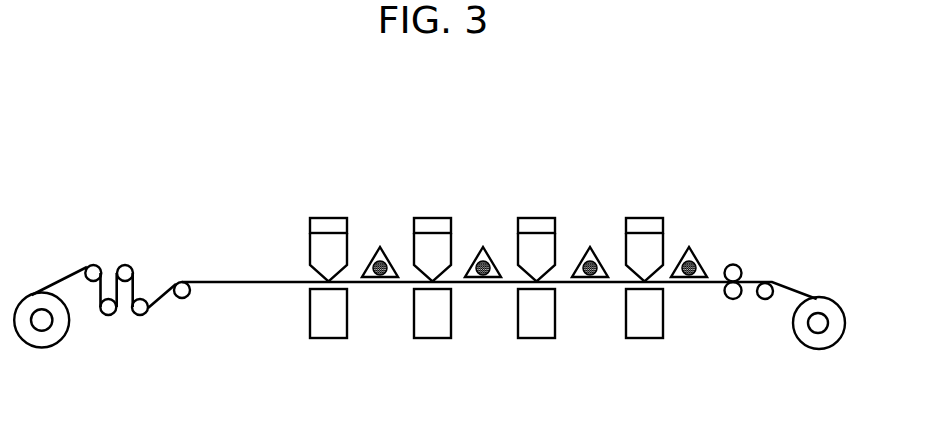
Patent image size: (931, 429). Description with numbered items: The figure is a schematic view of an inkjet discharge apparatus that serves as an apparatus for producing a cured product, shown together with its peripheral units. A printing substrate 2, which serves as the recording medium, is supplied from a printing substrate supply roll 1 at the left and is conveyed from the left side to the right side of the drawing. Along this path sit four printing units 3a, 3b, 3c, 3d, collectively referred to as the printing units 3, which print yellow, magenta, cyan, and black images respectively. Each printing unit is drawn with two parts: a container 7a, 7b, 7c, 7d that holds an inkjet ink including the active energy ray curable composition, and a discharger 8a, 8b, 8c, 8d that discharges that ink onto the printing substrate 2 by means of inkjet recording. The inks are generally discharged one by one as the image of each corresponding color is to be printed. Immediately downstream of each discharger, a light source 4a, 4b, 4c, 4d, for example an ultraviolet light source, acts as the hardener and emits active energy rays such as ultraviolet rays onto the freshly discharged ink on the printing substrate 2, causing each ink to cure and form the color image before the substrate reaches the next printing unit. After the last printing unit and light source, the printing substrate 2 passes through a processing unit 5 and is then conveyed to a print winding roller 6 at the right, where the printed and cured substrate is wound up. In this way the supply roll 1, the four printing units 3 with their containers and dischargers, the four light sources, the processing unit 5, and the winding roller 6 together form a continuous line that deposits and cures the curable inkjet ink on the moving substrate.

The printing substrate supply roll 1 is at (40, 328).
The printing substrate 2 is at (229, 280).
The printing units 3 is at (680, 159).
The printing unit 3a is at (326, 255).
The printing unit 3b is at (430, 255).
The printing unit 3c is at (534, 255).
The printing unit 3d is at (642, 255).
The light source 4a is at (377, 252).
The light source 4b is at (482, 243).
The light source 4c is at (590, 243).
The light source 4d is at (689, 241).
The processing unit 5 is at (738, 262).
The print winding roller 6 is at (817, 328).
The container 7a is at (324, 218).
The container 7b is at (432, 202).
The container 7c is at (536, 202).
The container 7d is at (644, 202).
The discharger 8a is at (348, 243).
The discharger 8b is at (443, 227).
The discharger 8c is at (547, 227).
The discharger 8d is at (655, 227).